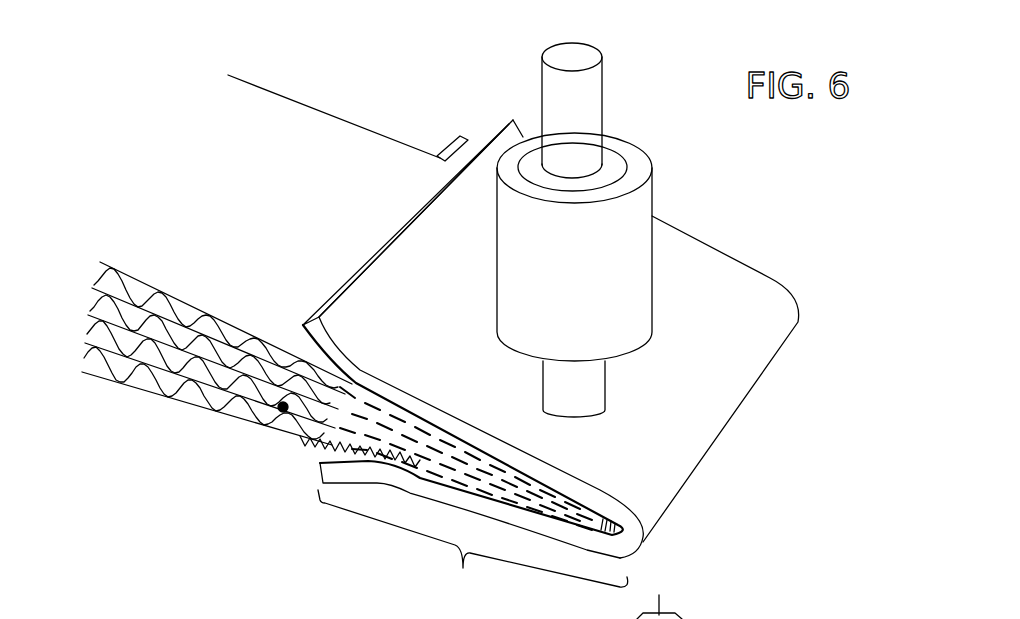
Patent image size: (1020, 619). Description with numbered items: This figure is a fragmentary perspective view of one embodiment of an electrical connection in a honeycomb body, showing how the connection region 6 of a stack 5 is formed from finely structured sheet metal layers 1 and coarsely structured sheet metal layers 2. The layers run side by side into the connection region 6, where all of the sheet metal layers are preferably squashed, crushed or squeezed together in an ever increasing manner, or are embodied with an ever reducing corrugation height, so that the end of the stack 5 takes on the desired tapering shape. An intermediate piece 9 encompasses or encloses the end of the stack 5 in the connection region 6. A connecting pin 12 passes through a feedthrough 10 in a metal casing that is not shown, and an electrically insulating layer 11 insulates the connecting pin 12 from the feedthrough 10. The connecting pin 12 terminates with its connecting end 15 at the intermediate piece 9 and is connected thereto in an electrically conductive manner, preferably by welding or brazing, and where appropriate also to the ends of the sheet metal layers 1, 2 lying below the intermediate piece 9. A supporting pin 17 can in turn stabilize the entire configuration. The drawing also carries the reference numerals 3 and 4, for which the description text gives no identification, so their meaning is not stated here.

The finely structured sheet metal layers 1 is at (233, 377).
The coarsely structured sheet metal layers 2 is at (165, 333).
The adhesive application line 3 is at (262, 102).
The bottom liner 4 is at (173, 400).
The stack 5 is at (331, 371).
The connection region 6 is at (473, 534).
The intermediate piece 9 is at (692, 447).
The feedthrough 10 is at (617, 263).
The electrically insulating layer 11 is at (615, 163).
The connecting pin 12 is at (593, 85).
The connecting end 15 is at (590, 418).
The supporting pin 17 is at (450, 157).